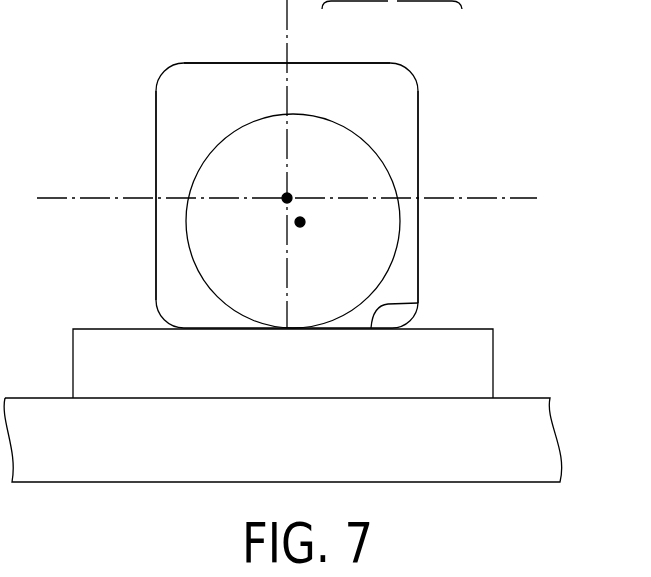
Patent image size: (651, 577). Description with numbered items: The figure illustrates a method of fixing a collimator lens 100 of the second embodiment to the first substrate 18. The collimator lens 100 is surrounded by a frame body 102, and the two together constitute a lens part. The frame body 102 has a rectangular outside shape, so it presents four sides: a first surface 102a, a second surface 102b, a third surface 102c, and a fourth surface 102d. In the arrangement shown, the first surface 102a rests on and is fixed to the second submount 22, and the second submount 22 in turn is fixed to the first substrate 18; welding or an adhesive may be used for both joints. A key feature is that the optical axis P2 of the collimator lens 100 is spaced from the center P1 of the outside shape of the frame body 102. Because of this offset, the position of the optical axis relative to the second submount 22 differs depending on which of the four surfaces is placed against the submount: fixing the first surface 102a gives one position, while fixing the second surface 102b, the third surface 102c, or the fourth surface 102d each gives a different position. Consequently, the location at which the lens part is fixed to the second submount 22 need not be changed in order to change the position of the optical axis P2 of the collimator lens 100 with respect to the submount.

The first substrate 18 is at (506, 398).
The second submount 22 is at (483, 329).
The collimator lens 100 is at (338, 146).
The frame body 102 is at (318, 74).
The first surface 102a is at (418, 303).
The second surface 102b is at (418, 145).
The third surface 102c is at (205, 63).
The fourth surface 102d is at (156, 151).
The center of the outside shape of the frame body P1 is at (285, 194).
The optical axis of the collimator lens P2 is at (296, 222).